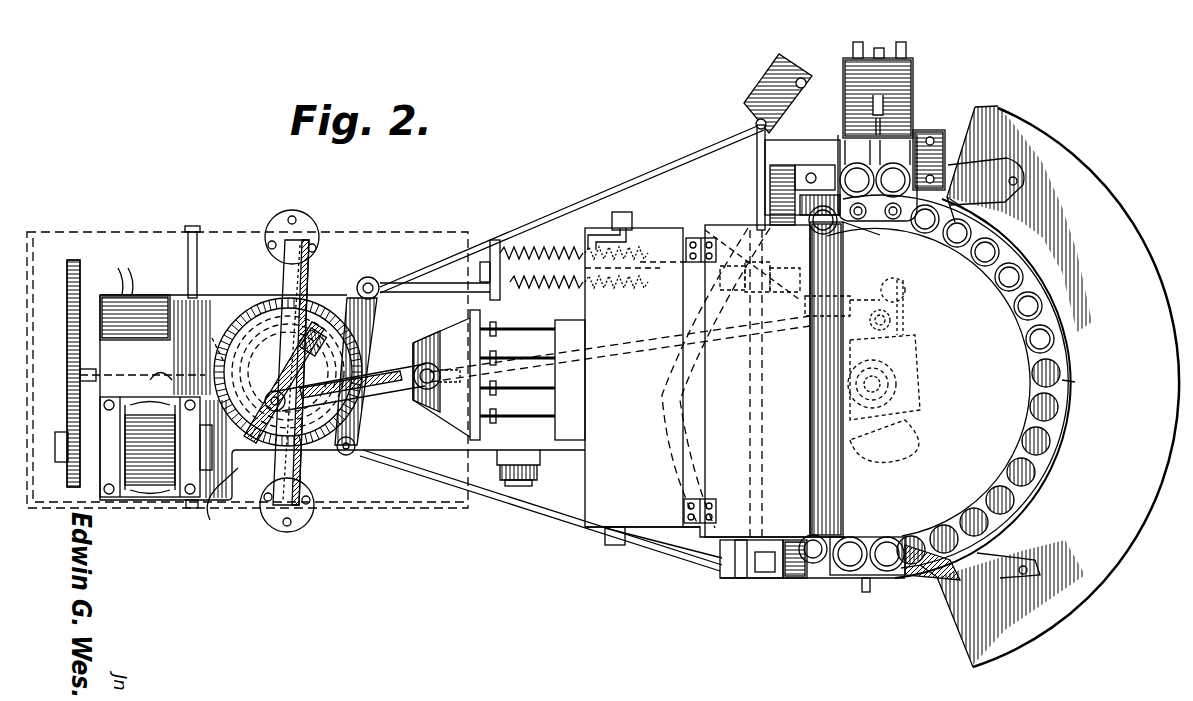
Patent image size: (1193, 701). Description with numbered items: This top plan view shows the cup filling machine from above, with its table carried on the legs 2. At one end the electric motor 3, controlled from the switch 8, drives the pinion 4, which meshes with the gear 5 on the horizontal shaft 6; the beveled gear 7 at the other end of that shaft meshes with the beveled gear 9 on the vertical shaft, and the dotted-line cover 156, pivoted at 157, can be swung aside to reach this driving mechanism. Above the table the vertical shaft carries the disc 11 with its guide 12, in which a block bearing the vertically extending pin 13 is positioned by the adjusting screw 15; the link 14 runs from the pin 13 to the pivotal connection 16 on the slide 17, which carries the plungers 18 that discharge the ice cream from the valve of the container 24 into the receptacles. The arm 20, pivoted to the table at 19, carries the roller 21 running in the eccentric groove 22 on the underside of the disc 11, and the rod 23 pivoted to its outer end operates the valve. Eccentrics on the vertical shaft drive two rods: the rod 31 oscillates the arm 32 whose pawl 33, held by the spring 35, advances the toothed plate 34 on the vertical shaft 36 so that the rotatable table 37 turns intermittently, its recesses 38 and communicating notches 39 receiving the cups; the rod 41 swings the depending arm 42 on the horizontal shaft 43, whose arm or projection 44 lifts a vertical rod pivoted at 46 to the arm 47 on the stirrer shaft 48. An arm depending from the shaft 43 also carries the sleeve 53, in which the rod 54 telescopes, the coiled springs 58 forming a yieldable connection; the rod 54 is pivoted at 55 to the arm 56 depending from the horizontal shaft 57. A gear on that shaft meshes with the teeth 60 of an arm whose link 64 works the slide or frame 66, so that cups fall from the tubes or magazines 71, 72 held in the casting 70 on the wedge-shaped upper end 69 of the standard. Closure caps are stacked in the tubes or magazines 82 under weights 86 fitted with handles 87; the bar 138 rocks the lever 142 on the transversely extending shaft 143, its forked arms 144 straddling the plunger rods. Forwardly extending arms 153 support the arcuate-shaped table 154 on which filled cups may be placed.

The legs 2 is at (283, 266).
The electric motor 3 is at (142, 500).
The pinion 4 is at (60, 464).
The gear 5 is at (66, 320).
The horizontal shaft 6 is at (79, 378).
The beveled gear 7 is at (211, 338).
The switch 8 is at (140, 310).
The beveled gear 9 is at (260, 311).
The disc 11 is at (310, 300).
The guide 12 is at (270, 412).
The vertically extending pin 13 is at (216, 504).
The link 14 is at (348, 397).
The adjusting screw 15 is at (325, 335).
The pivotal connection 16 is at (420, 400).
The slide 17 is at (452, 348).
The plungers 18 is at (535, 420).
The pivot 19 is at (370, 456).
The arm 20 is at (380, 330).
The roller 21 is at (369, 278).
The eccentric groove 22 is at (344, 457).
The rod 23 is at (432, 270).
The container 24 is at (610, 535).
The rod 31 is at (641, 343).
The arm 32 is at (887, 286).
The pawl 33 is at (892, 322).
The toothed plate 34 is at (908, 390).
The spring 35 is at (905, 296).
The vertical shaft 36 is at (947, 381).
The rotatable table 37 is at (802, 503).
The recesses 38 is at (1045, 464).
The notches 39 is at (1072, 380).
The rod 41 is at (450, 383).
The depending arm 42 is at (523, 456).
The horizontal shaft 43 is at (520, 485).
The arm or projection 44 is at (540, 262).
The pivotal connection 46 is at (585, 260).
The arm 47 is at (597, 234).
The shaft 48 is at (624, 212).
The sleeve 53 is at (684, 262).
The rod 54 is at (684, 276).
The pivotal connection 55 is at (748, 284).
The arm 56 is at (756, 265).
The horizontal shaft 57 is at (752, 370).
The coiled springs 58 is at (505, 248).
The teeth 60 is at (725, 566).
The link 64 is at (758, 562).
The slide or frame 66 is at (800, 572).
The wedge-shaped upper end 69 is at (866, 594).
The casting 70 is at (840, 580).
The tube or magazine 71 is at (855, 538).
The tube or magazine 72 is at (893, 538).
The tubes or magazines 82 is at (962, 172).
The weight 86 is at (838, 236).
The handle 87 is at (840, 140).
The bar 138 is at (885, 95).
The lever 142 is at (886, 132).
The transversely extending shaft 143 is at (862, 140).
The arms 144 is at (994, 212).
The arms 153 is at (950, 157).
The arcuate-shaped table 154 is at (1049, 386).
The cover 156 is at (392, 237).
The pivotal connection 157 is at (193, 229).